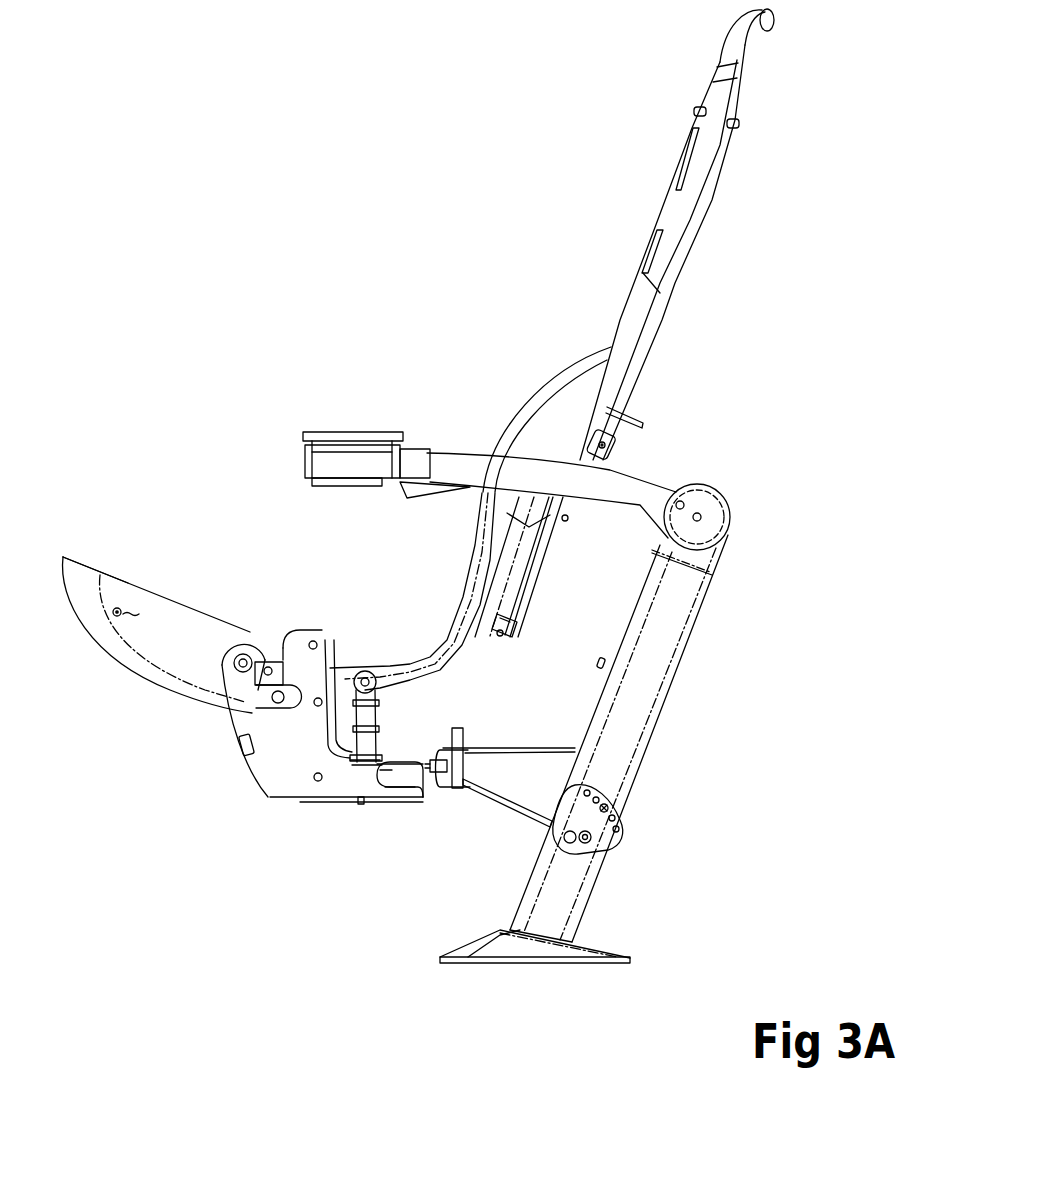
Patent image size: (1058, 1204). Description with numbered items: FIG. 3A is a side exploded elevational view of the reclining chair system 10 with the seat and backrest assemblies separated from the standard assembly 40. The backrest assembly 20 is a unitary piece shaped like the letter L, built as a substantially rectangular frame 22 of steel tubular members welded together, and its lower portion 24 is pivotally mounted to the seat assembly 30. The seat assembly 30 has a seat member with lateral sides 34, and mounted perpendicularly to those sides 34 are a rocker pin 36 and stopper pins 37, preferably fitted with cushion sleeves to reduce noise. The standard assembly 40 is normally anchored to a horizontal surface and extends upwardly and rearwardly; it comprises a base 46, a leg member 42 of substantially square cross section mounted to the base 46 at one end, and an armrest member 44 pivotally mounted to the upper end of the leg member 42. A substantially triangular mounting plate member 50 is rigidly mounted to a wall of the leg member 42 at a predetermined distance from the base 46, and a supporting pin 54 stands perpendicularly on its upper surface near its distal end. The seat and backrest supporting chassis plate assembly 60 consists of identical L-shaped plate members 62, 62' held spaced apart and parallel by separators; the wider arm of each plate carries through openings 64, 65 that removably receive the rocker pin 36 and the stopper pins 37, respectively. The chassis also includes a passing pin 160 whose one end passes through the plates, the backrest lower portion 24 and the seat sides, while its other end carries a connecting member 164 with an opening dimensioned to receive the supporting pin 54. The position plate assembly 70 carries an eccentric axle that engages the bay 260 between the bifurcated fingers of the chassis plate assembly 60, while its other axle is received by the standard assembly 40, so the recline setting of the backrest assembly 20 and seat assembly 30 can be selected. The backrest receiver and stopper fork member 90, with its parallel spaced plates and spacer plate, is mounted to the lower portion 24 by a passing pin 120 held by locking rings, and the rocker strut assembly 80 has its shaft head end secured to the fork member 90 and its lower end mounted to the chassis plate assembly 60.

The reclining chair system 10 is at (471, 92).
The backrest assembly 20 is at (735, 148).
The frame 22 is at (683, 202).
The lower portion 24 is at (342, 677).
The seat assembly 30 is at (157, 564).
The lateral sides 34 is at (141, 520).
The rocker pin 36 is at (232, 748).
The stopper pins 37 is at (150, 690).
The standard assembly 40 is at (715, 606).
The leg member 42 is at (638, 673).
The armrest member 44 is at (495, 462).
The base 46 is at (595, 917).
The mounting plate member 50 is at (510, 696).
The supporting pin 54 is at (463, 785).
The seat and backrest supporting chassis plate assembly 60 is at (314, 764).
The plate member 62 is at (382, 842).
The plate member 62' is at (377, 830).
The through opening 64 is at (213, 771).
The through opening 65 is at (236, 656).
The position plate assembly 70 is at (640, 820).
The rocker strut assembly 80 is at (344, 777).
The backrest receiver and stopper fork member 90 is at (391, 681).
The passing pin 120 is at (393, 663).
The passing pin 160 is at (266, 660).
The connecting member 164 is at (215, 710).
The bay 260 is at (388, 765).